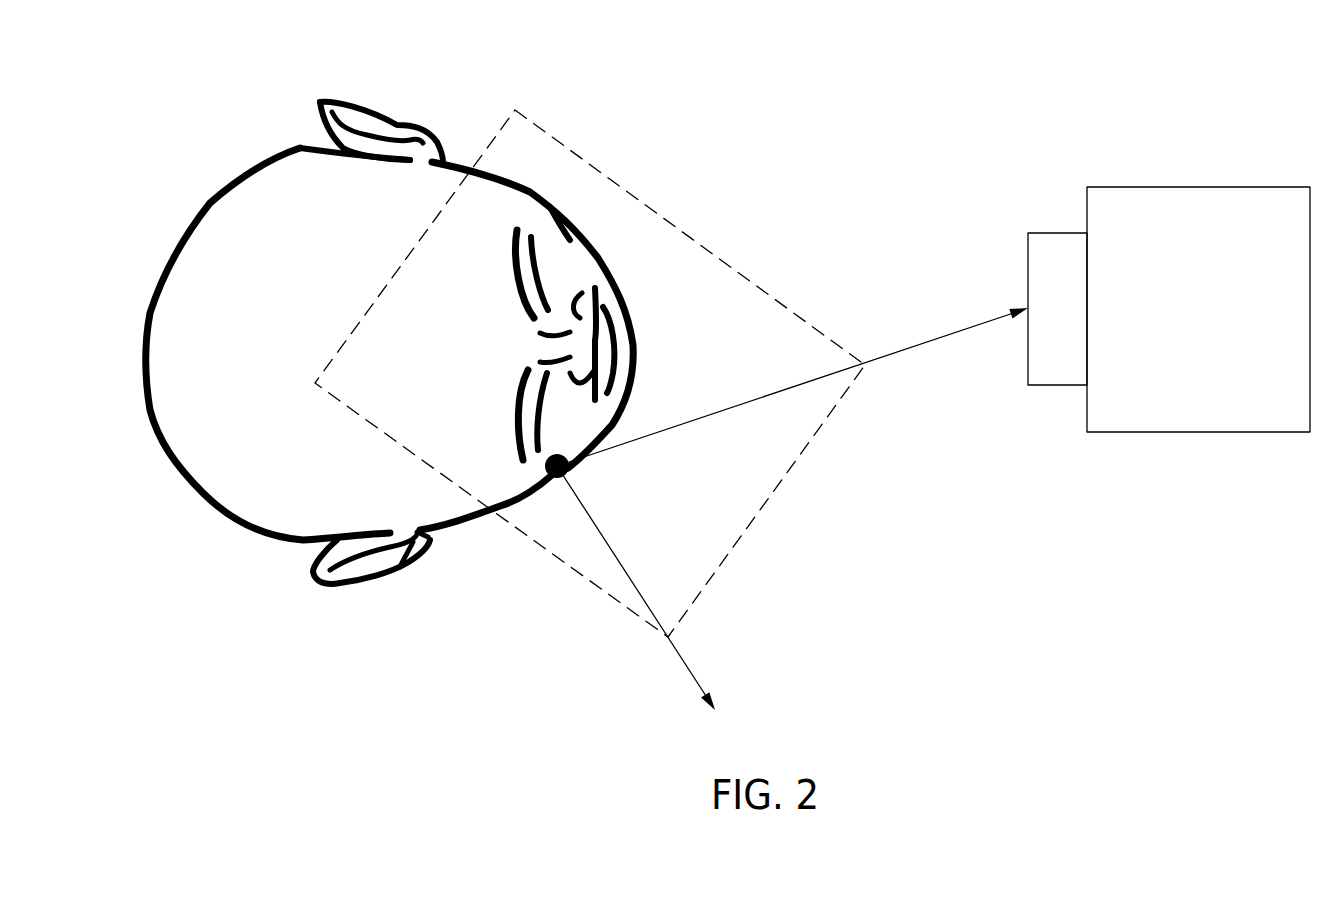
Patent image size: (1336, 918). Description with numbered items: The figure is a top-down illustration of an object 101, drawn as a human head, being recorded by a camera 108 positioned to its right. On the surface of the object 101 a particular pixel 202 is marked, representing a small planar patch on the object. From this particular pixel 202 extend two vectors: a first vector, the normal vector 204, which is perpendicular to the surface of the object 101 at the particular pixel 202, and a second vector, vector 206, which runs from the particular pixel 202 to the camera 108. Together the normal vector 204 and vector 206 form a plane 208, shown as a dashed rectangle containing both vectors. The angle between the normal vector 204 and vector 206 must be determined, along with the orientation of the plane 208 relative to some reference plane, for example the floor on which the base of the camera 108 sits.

The object 101 is at (241, 167).
The camera 108 is at (1163, 187).
The particular pixel 202 is at (573, 473).
The normal vector 204 is at (688, 666).
The vector 206 is at (932, 338).
The plane 208 is at (618, 180).